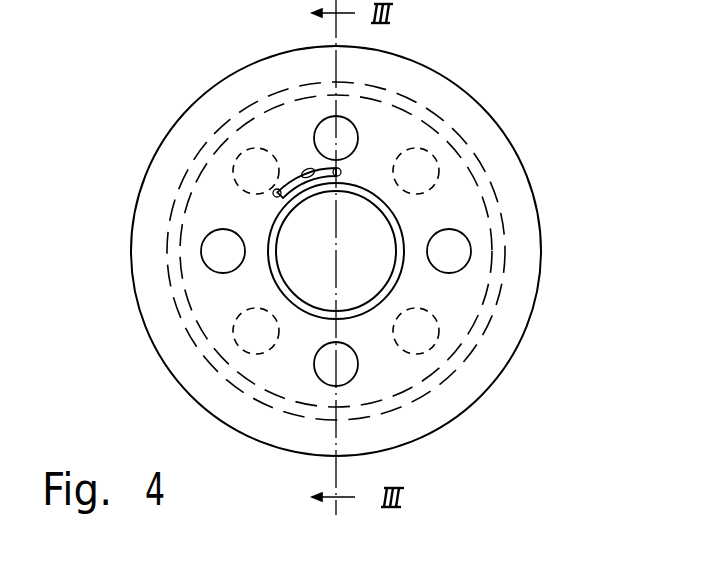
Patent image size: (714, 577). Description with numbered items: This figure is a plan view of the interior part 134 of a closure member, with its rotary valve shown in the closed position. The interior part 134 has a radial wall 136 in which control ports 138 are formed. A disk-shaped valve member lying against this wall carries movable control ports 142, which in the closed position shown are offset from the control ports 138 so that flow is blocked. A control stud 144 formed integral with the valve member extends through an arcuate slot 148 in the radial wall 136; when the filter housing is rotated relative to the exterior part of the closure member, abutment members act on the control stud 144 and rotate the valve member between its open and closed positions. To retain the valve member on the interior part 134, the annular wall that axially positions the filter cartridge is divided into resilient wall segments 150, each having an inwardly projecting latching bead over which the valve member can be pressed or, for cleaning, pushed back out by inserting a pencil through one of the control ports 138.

The interior part 134 is at (484, 106).
The radial wall 136 is at (455, 182).
The control ports 138 is at (460, 243).
The movable control ports 142 is at (433, 343).
The control stud 144 is at (277, 194).
The arcuate slot 148 is at (312, 168).
The resilient wall segments 150 is at (500, 283).